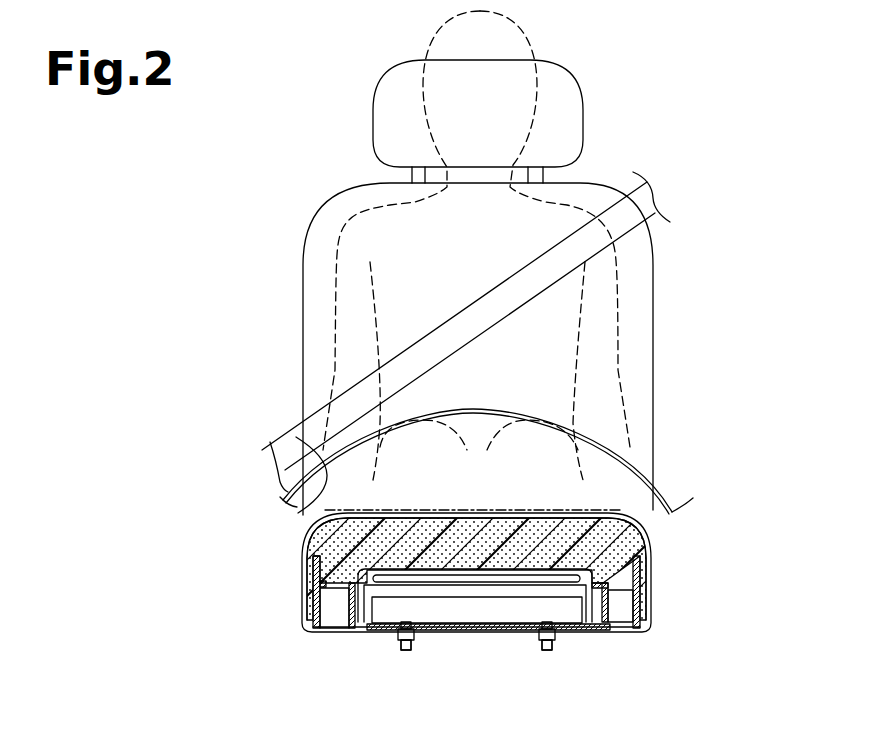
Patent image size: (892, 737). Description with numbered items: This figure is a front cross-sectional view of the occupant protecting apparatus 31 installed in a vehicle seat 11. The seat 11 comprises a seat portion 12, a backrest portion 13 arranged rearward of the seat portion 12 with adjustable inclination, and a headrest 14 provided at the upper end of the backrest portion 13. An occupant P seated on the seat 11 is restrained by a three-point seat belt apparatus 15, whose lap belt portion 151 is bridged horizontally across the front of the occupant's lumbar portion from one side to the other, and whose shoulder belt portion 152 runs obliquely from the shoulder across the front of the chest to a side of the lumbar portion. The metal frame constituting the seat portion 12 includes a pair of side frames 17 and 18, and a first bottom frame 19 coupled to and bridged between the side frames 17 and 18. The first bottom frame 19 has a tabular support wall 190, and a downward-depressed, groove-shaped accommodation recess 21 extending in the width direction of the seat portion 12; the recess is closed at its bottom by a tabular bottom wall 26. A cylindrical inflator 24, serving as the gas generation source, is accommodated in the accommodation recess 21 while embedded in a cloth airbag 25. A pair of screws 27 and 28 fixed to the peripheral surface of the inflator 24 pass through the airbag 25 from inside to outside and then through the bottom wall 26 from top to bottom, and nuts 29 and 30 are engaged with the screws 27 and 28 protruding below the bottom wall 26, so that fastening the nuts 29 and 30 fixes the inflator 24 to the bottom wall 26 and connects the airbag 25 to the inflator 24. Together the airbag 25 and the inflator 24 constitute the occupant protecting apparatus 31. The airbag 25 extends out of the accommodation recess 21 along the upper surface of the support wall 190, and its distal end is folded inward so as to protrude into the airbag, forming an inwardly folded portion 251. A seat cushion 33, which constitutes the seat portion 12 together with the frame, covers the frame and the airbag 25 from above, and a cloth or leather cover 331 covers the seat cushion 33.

The occupant P is at (530, 42).
The seat 11 is at (476, 549).
The seat portion 12 is at (652, 592).
The backrest portion 13 is at (645, 510).
The headrest 14 is at (385, 119).
The seat belt apparatus 15 is at (416, 343).
The lap belt portion 151 is at (297, 507).
The shoulder belt portion 152 is at (290, 452).
The side frame 17 is at (314, 598).
The side frame 18 is at (647, 604).
The first bottom frame 19 is at (517, 668).
The support wall 190 is at (627, 622).
The accommodation recess 21 is at (356, 612).
The inflator 24 is at (481, 610).
The airbag 25 is at (475, 566).
The inwardly folded portion 251 is at (508, 572).
The bottom wall 26 is at (575, 625).
The screw 27 is at (407, 651).
The screw 28 is at (547, 651).
The nut 29 is at (400, 640).
The nut 30 is at (539, 640).
The occupant protecting apparatus 31 is at (475, 583).
The seat cushion 33 is at (469, 549).
The cover 331 is at (300, 567).